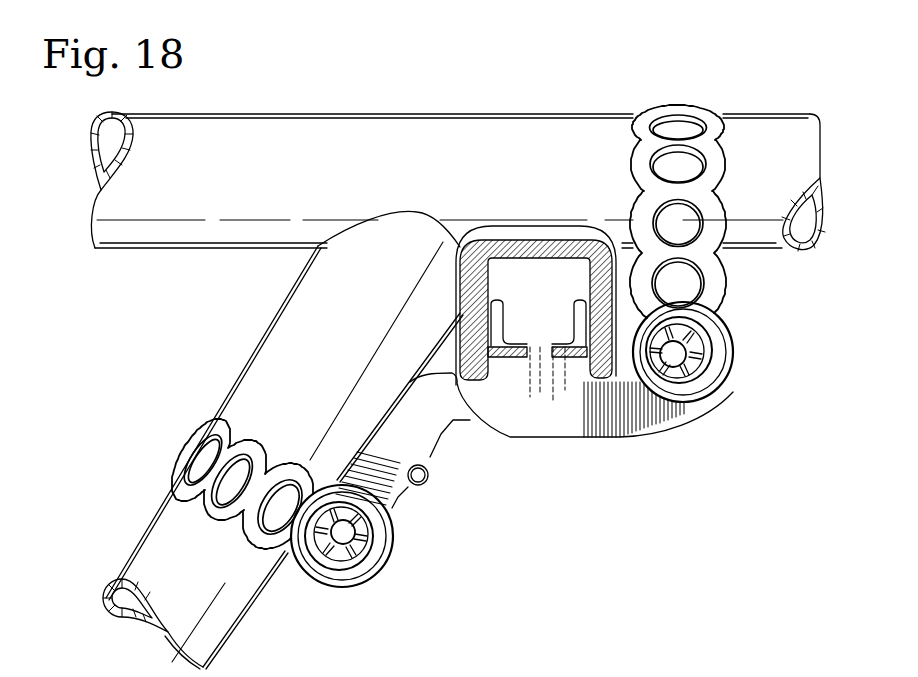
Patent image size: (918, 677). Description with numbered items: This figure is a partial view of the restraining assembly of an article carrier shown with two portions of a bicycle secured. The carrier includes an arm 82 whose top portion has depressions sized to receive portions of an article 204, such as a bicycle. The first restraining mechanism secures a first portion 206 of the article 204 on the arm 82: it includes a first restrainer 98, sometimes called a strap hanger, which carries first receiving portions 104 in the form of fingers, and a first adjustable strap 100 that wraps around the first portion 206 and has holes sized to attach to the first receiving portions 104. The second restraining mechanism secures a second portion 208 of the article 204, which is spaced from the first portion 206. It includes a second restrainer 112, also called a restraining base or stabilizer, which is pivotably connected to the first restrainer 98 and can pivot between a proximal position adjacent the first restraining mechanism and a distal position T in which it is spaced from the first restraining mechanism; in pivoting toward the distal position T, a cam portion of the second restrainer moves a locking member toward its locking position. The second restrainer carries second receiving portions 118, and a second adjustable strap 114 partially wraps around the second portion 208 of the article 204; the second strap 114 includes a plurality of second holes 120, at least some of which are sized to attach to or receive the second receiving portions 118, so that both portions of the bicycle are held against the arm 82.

The article 204 is at (280, 133).
The first portion of article 206 is at (775, 135).
The second portion of article 208 is at (250, 400).
The arm 82 is at (530, 232).
The first restrainer 98 is at (613, 423).
The first adjustable strap 100 is at (710, 285).
The first receiving portions 104 is at (671, 353).
The second restrainer 112 is at (423, 438).
The distal position T is at (395, 496).
The second adjustable strap 114 is at (180, 485).
The second holes 120 is at (230, 488).
The second receiving portions 118 is at (345, 536).